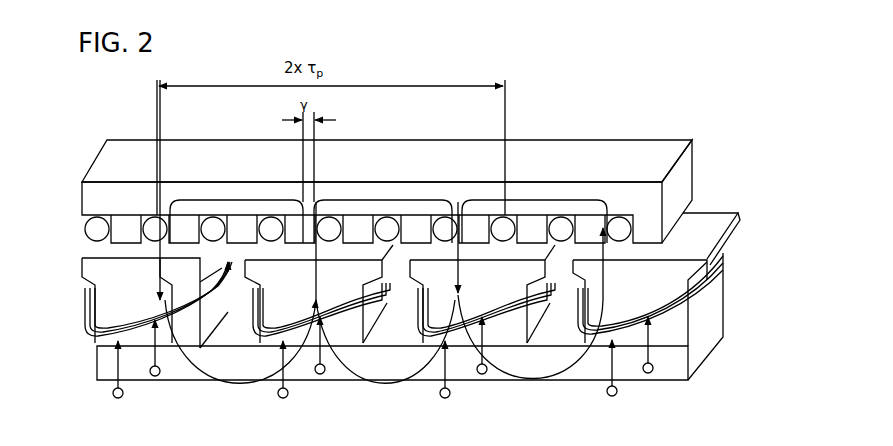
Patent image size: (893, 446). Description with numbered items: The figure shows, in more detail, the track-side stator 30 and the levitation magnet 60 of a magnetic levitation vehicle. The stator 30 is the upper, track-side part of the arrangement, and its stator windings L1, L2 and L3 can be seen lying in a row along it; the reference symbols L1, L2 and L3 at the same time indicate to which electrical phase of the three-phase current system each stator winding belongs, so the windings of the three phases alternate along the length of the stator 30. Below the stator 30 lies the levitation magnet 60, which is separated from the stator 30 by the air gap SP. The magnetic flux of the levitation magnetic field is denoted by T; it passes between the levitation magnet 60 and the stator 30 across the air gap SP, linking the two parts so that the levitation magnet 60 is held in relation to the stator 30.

The track-side stator 30 is at (647, 197).
The levitation magnet 60 is at (667, 372).
The air gap SP is at (695, 203).
The magnetic flux T is at (195, 370).
The stator winding L1 is at (387, 229).
The stator winding L2 is at (358, 229).
The stator winding L3 is at (329, 229).